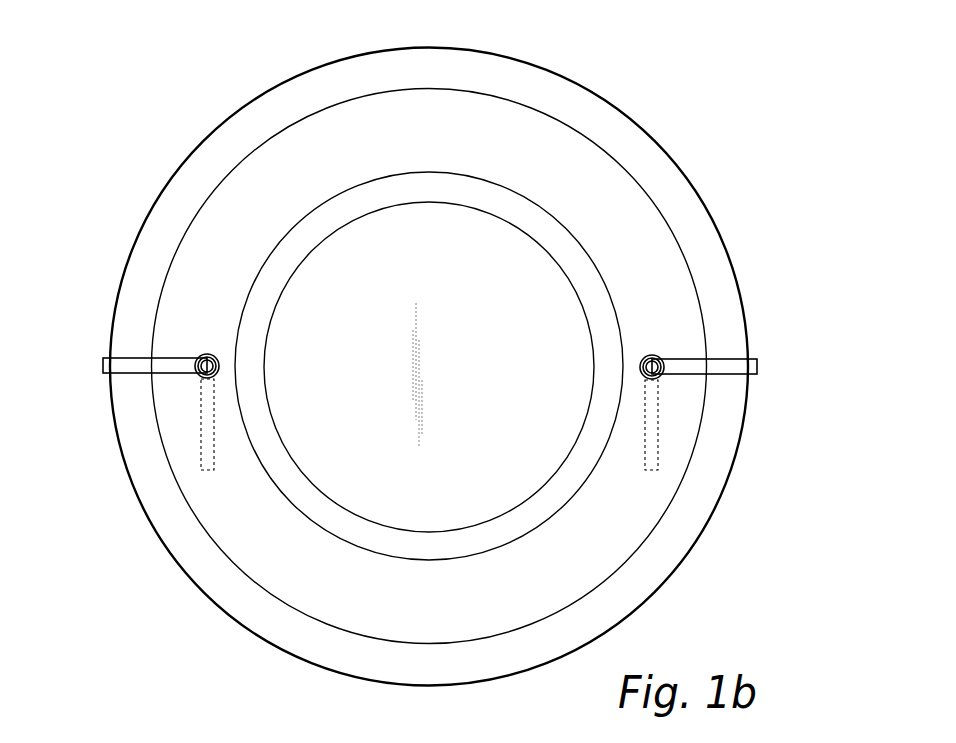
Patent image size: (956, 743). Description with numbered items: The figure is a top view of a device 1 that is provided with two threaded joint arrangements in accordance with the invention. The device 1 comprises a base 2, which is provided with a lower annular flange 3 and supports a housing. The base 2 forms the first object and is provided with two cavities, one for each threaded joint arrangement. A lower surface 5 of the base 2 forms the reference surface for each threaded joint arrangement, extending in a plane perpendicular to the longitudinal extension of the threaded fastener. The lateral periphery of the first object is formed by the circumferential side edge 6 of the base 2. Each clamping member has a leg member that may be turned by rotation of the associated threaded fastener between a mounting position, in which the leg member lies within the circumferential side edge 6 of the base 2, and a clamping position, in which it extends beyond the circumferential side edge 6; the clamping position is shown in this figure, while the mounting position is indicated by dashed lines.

The device 1 is at (661, 86).
The base 2 is at (650, 247).
The lower annular flange 3 is at (538, 85).
The lower surface 5 is at (538, 333).
The circumferential side edge 6 is at (210, 197).